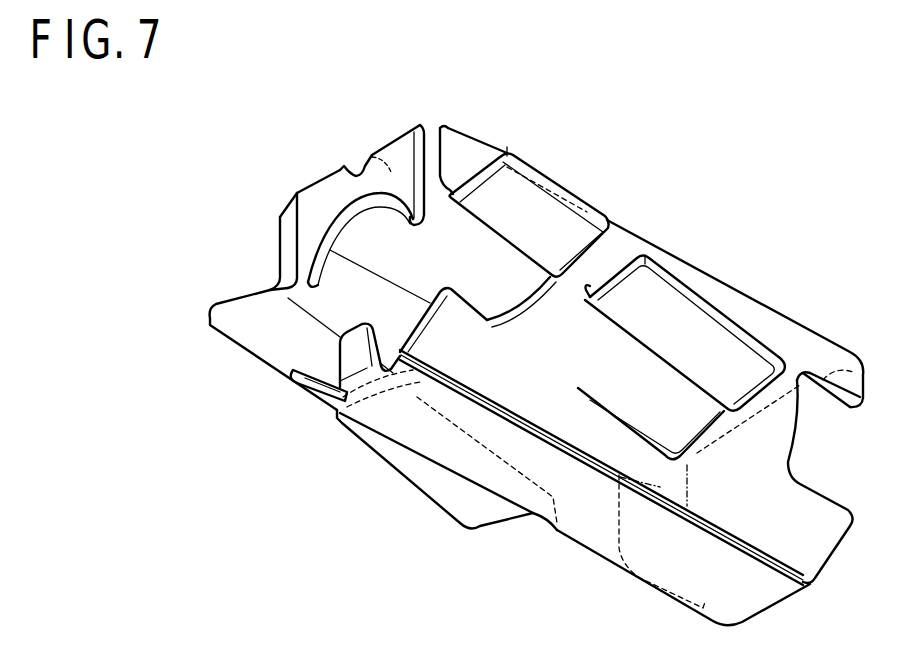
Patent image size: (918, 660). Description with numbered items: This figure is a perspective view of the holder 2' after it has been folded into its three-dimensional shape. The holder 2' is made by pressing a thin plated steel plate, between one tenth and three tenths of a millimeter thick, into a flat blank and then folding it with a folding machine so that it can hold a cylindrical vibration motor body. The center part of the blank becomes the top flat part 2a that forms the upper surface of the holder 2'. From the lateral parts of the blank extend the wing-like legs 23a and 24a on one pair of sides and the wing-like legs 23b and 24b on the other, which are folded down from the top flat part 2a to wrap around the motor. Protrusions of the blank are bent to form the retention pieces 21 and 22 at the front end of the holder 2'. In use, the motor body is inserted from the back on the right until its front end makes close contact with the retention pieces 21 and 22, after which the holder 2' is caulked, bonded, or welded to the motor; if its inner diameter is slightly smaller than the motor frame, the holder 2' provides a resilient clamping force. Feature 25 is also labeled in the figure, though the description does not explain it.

The holder 2' is at (575, 376).
The top flat part 2a is at (441, 225).
The retention piece 21 is at (313, 204).
The retention piece 22 is at (343, 352).
The wing-like leg 23a is at (255, 320).
The wing-like leg 23b is at (450, 497).
The wing-like leg 24a is at (540, 200).
The wing-like leg 24b is at (707, 332).
The notch 25 is at (358, 168).